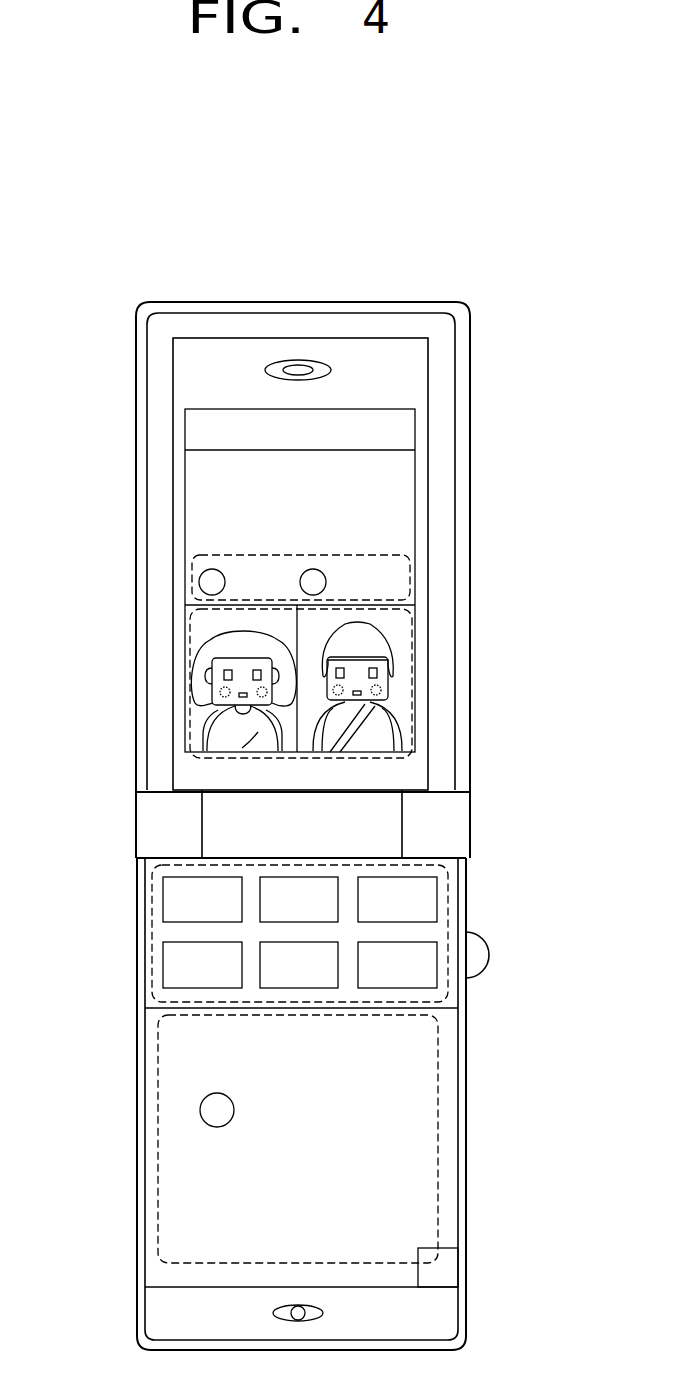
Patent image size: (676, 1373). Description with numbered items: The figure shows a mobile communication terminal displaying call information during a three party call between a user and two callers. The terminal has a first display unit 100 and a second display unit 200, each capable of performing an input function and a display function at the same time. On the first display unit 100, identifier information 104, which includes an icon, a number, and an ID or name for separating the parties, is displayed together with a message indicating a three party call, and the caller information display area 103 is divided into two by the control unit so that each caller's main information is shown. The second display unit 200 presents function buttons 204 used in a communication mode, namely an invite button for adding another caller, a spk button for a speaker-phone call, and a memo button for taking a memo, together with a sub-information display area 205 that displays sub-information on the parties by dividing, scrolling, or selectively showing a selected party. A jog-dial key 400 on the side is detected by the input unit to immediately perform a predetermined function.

The first display unit 100 is at (430, 763).
The caller information display area 103 is at (192, 683).
The identifier information 104 is at (192, 575).
The second display unit 200 is at (453, 1050).
The function buttons 204 is at (150, 932).
The sub-information display area 205 is at (158, 1082).
The jog-dial key 400 is at (475, 948).